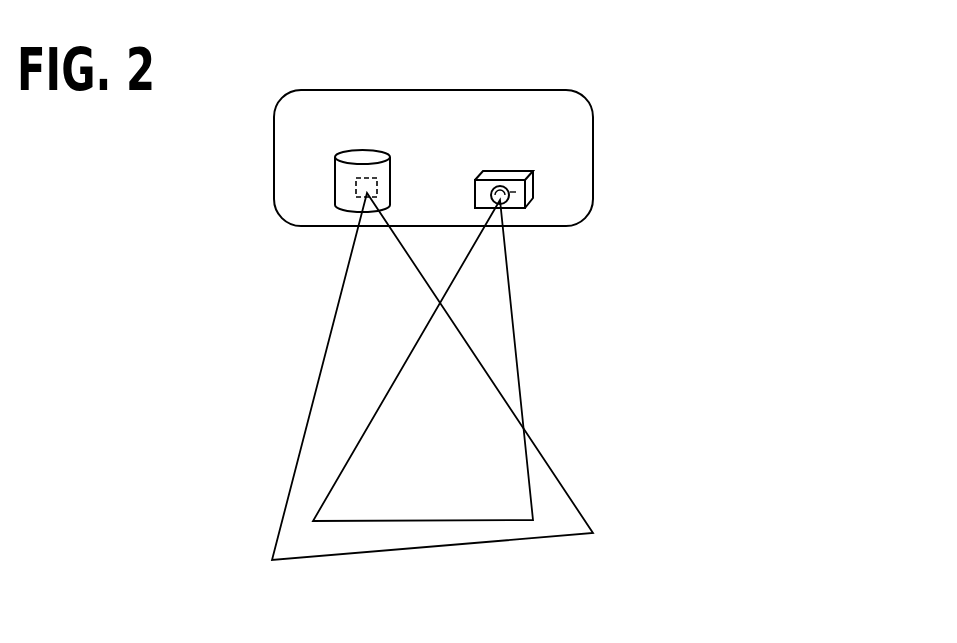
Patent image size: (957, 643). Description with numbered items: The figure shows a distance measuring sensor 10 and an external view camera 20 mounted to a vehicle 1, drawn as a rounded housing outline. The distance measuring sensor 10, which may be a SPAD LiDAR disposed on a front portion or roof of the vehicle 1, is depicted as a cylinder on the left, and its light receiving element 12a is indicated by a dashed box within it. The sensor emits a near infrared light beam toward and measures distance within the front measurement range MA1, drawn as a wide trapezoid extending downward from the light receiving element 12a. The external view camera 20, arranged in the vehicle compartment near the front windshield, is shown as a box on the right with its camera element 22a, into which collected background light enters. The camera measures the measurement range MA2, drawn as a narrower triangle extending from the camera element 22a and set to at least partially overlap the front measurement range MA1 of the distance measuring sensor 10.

The vehicle 1 is at (333, 90).
The distance measuring sensor 10 is at (335, 175).
The light receiving element 12a is at (357, 193).
The external view camera 20 is at (533, 181).
The camera element 22a is at (535, 198).
The front measurement range MA1 is at (290, 487).
The measurement range MA2 is at (530, 483).